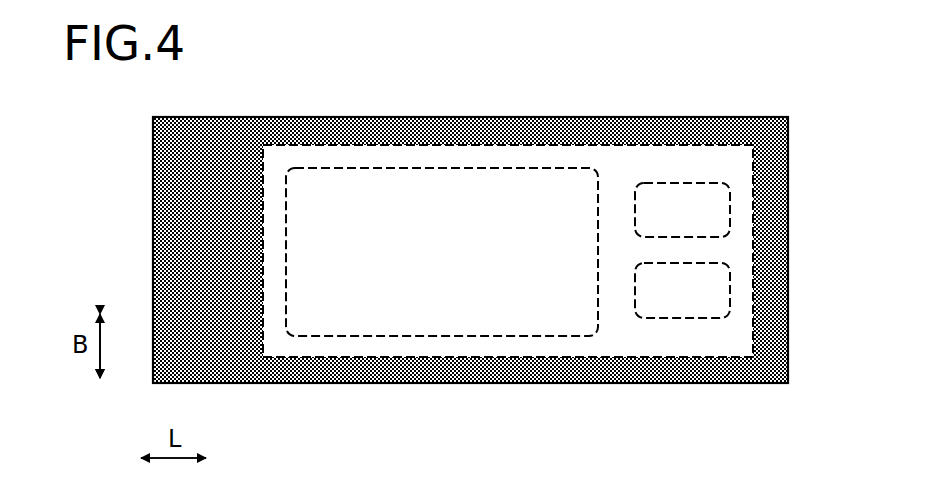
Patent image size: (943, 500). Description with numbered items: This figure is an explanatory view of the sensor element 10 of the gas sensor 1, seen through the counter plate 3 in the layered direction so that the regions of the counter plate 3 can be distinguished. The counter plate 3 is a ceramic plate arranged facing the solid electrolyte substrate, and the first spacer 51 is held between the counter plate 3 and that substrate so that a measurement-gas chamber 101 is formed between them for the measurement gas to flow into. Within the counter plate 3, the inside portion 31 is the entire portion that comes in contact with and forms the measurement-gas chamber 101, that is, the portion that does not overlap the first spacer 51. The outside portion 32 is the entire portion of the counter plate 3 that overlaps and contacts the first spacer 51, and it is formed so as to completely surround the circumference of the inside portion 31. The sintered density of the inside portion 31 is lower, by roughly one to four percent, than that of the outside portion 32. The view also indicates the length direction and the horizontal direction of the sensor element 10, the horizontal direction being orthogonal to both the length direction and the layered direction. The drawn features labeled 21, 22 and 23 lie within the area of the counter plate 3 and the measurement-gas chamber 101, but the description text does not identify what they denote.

The gas sensor 1 is at (762, 410).
The sensor element 10 is at (597, 115).
The counter plate 3 is at (427, 60).
The outside portion 32 is at (320, 135).
The inside portion 31 is at (393, 200).
The first electrode layer 21 is at (551, 213).
The first terminal electrode 23 is at (677, 173).
The second terminal electrode 22 is at (666, 302).
The first spacer 51 is at (333, 373).
The measurement-gas chamber 101 is at (455, 357).